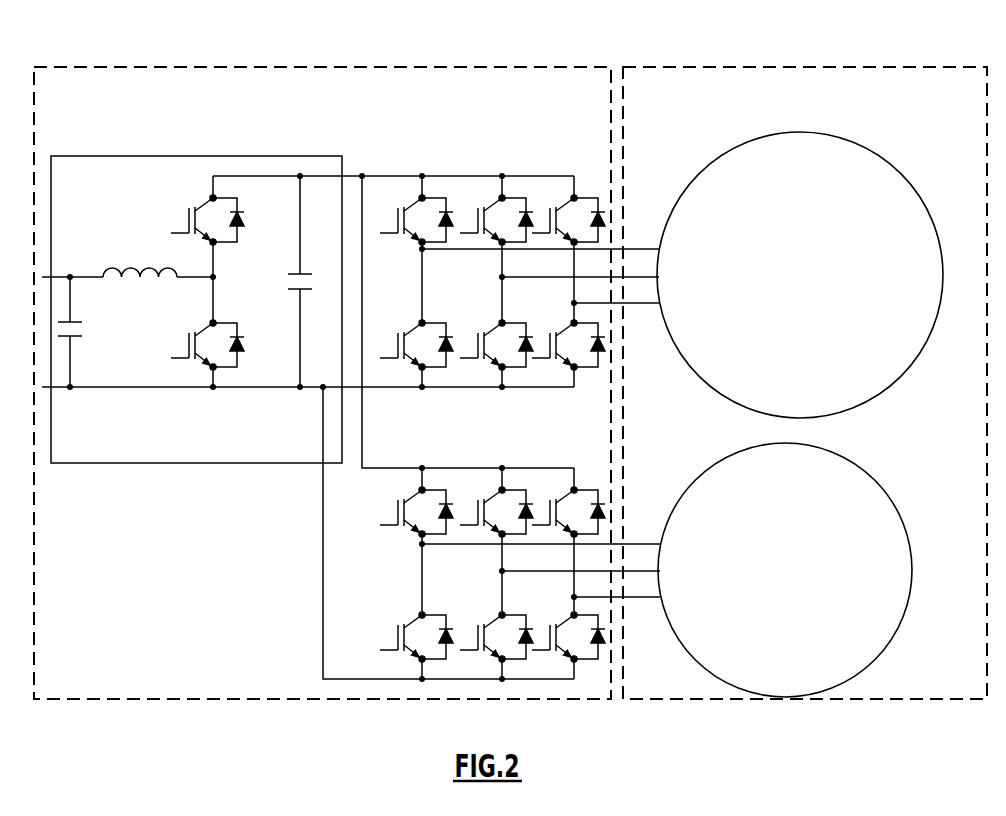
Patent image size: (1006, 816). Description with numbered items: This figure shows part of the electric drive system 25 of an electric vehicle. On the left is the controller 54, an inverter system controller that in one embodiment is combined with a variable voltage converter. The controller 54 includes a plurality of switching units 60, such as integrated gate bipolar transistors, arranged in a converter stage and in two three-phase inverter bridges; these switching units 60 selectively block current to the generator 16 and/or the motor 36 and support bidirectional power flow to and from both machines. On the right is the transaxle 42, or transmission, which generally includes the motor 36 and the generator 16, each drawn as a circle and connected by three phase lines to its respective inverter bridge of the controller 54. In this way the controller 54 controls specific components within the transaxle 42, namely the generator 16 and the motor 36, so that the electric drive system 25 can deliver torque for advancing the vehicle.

The electric drive system 25 is at (496, 44).
The controller 54 is at (246, 66).
The switching unit 60 is at (176, 200).
The transaxle 42 is at (841, 66).
The motor 36 is at (924, 194).
The generator 16 is at (905, 612).